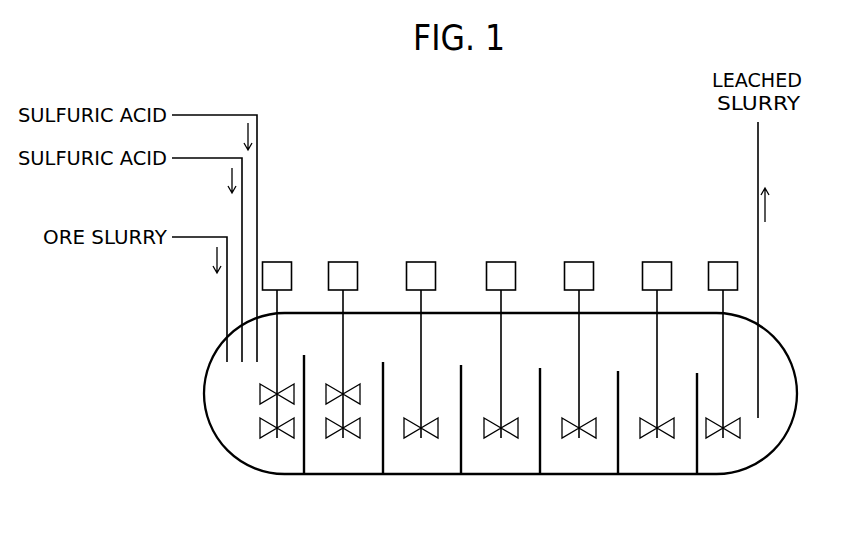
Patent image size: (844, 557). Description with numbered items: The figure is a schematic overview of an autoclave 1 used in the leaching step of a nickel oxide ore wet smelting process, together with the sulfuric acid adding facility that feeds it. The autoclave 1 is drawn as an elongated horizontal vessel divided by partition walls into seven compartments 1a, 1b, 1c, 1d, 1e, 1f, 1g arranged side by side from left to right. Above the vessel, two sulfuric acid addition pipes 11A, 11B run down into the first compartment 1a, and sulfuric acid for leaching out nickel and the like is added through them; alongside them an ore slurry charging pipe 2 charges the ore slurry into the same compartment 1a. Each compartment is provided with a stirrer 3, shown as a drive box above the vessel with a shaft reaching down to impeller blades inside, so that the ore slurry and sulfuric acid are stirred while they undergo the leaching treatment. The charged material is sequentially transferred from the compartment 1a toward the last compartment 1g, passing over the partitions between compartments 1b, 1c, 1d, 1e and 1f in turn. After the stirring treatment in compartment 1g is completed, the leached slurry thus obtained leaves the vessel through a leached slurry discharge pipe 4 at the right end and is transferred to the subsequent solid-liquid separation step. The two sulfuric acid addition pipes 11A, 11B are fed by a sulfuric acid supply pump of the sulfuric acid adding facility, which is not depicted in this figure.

The autoclave 1 is at (218, 445).
The compartment 1a is at (281, 467).
The compartment 1b is at (346, 467).
The compartment 1c is at (423, 467).
The compartment 1d is at (503, 467).
The compartment 1e is at (581, 467).
The compartment 1f is at (658, 467).
The compartment 1g is at (716, 467).
The ore slurry charging pipe 2 is at (190, 240).
The stirrer 3 is at (277, 262).
The leached slurry discharge pipe 4 is at (759, 158).
The sulfuric acid addition pipe 11A is at (201, 114).
The sulfuric acid addition pipe 11B is at (196, 160).